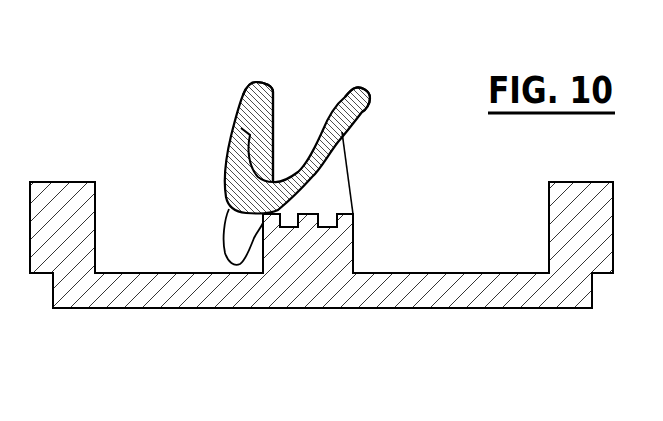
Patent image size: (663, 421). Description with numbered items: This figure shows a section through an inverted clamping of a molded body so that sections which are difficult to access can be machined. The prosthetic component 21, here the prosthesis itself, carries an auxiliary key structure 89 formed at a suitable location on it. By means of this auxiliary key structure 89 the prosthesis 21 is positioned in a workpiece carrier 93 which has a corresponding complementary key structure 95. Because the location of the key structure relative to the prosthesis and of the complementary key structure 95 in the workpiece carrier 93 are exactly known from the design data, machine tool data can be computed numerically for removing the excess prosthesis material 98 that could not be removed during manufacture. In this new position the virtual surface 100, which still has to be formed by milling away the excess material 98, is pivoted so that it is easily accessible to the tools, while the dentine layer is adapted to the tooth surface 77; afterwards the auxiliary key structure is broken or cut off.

The prosthetic component 21 is at (352, 91).
The tooth surface 77 is at (238, 246).
The auxiliary key structure 89 is at (333, 188).
The workpiece carrier 93 is at (117, 297).
The complementary key structure 95 is at (307, 230).
The excess prosthesis material 98 is at (272, 141).
The virtual surface 100 is at (240, 128).